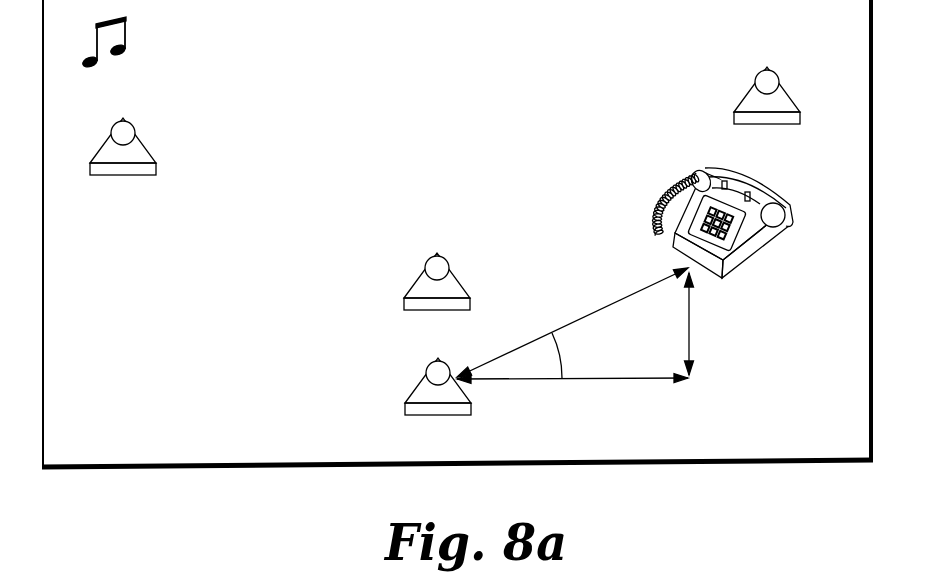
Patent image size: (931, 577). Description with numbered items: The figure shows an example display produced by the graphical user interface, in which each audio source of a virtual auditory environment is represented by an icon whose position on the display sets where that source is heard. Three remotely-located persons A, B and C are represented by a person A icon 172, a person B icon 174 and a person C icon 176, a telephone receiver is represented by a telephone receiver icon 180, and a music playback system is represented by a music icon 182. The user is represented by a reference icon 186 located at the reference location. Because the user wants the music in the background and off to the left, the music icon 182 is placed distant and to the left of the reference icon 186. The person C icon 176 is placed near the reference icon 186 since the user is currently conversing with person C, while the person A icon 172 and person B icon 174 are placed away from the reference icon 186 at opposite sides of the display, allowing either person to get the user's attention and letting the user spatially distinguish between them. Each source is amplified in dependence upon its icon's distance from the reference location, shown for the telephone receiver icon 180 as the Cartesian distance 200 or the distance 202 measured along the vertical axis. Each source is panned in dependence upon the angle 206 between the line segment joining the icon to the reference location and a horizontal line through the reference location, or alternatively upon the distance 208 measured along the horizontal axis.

The person A icon 172 is at (130, 176).
The person B icon 174 is at (780, 125).
The person C icon 176 is at (417, 312).
The reference icon 186 is at (418, 416).
The music icon 182 is at (128, 43).
The telephone receiver icon 180 is at (698, 170).
The Cartesian distance 200 is at (592, 312).
The distance measured along the vertical axis 202 is at (695, 322).
The distance measured along the horizontal axis 208 is at (593, 378).
The angle 206 is at (563, 348).